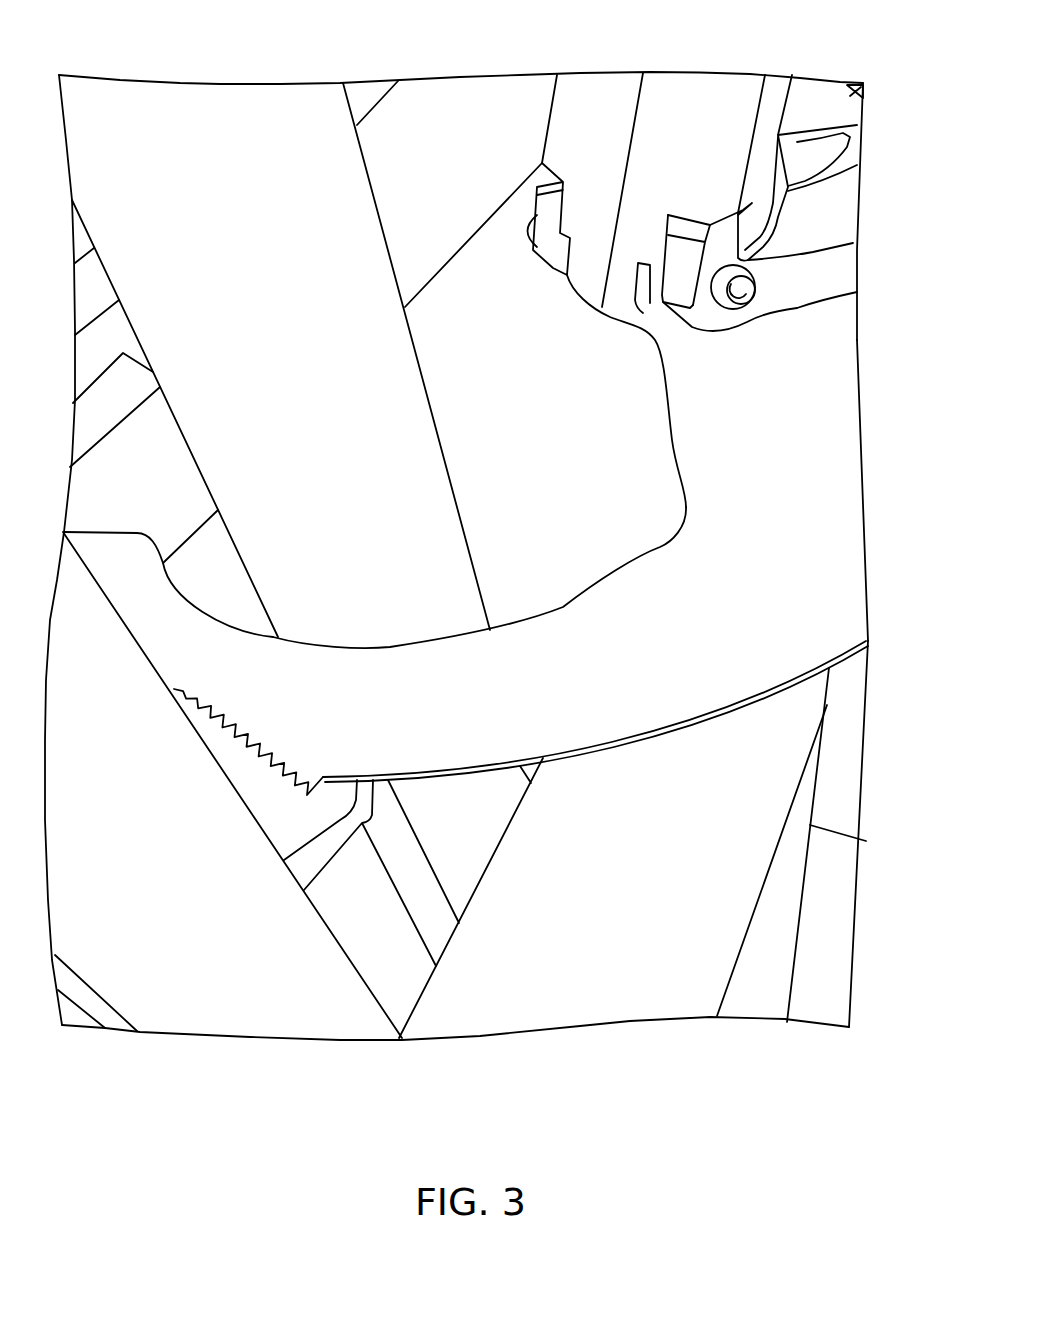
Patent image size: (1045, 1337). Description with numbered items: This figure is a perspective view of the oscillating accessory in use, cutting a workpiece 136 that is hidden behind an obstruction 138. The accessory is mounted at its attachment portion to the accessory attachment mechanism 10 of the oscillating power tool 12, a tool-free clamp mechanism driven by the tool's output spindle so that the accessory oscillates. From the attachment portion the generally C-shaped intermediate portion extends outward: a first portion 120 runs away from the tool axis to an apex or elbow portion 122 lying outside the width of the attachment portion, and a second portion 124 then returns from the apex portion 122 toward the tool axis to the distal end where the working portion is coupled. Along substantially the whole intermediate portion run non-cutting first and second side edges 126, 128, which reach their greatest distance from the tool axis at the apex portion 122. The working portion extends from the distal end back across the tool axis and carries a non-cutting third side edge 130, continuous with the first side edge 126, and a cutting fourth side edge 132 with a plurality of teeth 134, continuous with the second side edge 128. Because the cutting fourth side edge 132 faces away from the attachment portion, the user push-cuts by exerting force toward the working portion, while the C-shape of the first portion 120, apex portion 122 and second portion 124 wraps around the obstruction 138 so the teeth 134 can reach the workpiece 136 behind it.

The accessory attachment mechanism 10 is at (846, 272).
The oscillating power tool 12 is at (690, 108).
The first portion 120 is at (677, 395).
The apex portion 122 is at (855, 607).
The second portion 124 is at (682, 724).
The first side edge 126 is at (660, 547).
The second side edge 128 is at (815, 670).
The third side edge 130 is at (192, 610).
The cutting fourth side edge 132 is at (258, 771).
The teeth 134 is at (290, 787).
The workpiece 136 is at (188, 1025).
The obstruction 138 is at (405, 407).